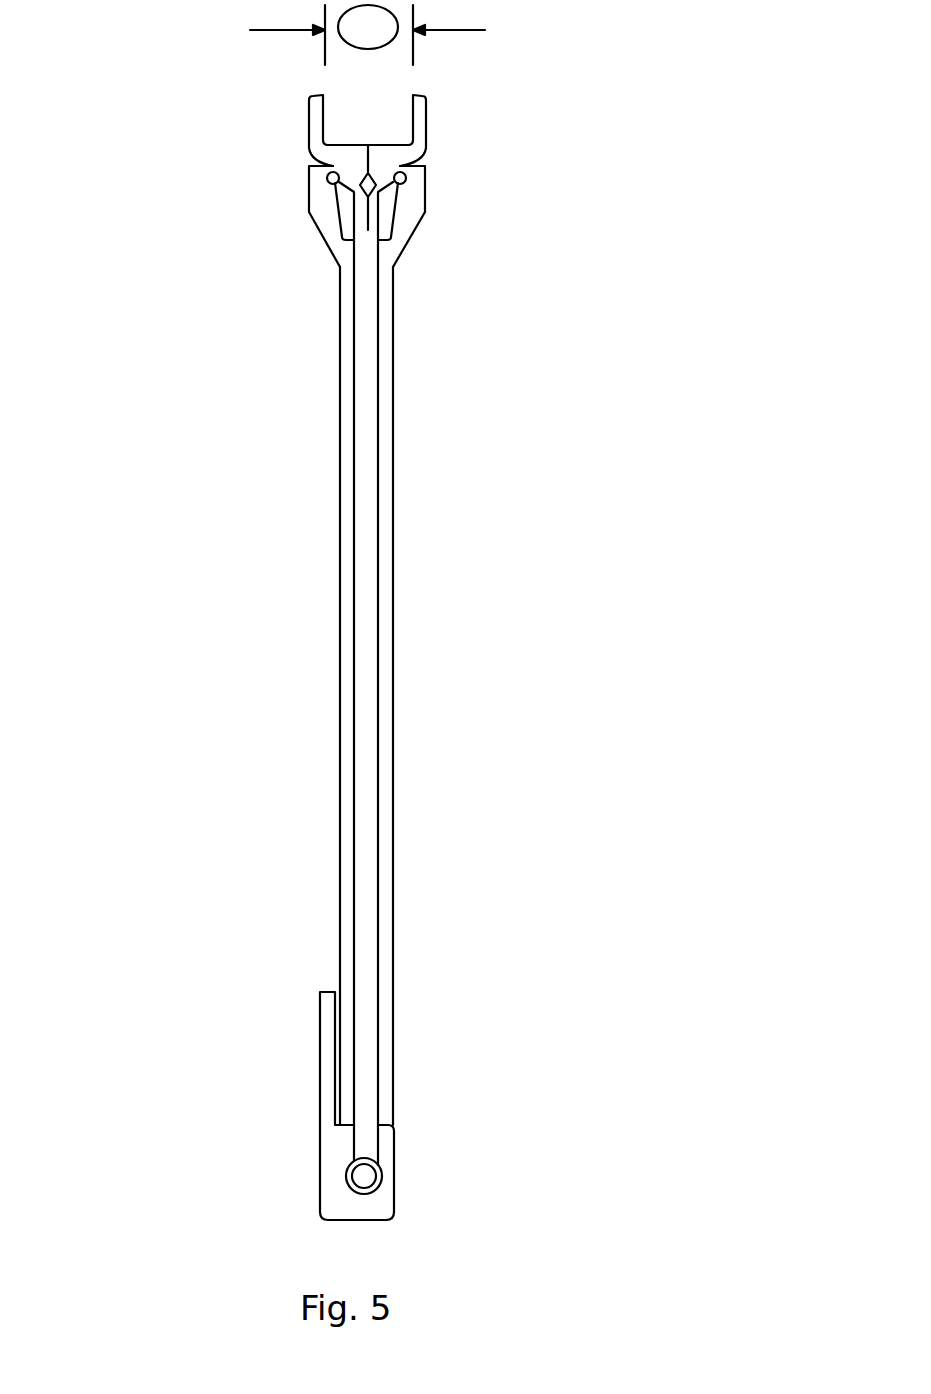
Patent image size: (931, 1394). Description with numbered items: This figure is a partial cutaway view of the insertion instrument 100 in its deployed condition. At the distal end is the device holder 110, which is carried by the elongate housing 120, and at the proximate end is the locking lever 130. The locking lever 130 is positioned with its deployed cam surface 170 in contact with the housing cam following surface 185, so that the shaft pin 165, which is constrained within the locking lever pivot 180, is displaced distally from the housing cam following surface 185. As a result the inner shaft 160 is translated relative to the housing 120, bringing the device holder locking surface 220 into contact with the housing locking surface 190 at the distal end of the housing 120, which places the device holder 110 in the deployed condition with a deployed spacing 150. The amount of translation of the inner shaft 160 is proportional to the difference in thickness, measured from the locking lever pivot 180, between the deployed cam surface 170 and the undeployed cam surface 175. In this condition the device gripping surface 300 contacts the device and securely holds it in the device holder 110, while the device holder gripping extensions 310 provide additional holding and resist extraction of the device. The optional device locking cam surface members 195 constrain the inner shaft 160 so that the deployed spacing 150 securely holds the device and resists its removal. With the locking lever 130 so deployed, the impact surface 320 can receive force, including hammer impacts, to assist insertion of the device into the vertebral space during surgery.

The insertion instrument 100 is at (683, 455).
The device holder 110 is at (508, 83).
The housing 120 is at (391, 603).
The locking lever 130 is at (320, 1150).
The deployed spacing 150 is at (367, 35).
The inner shaft 160 is at (378, 723).
The shaft pin 165 is at (382, 1170).
The deployed cam surface 170 is at (352, 1145).
The undeployed cam surface 175 is at (373, 1177).
The locking lever pivot 180 is at (393, 1203).
The housing cam following surface 185 is at (390, 1128).
The housing locking surface 190 is at (418, 158).
The device locking cam surface members 195 is at (408, 178).
The device holder locking surface 220 is at (312, 173).
The device gripping surface 300 is at (325, 116).
The device holder gripping extensions 310 is at (420, 95).
The impact surface 320 is at (343, 1221).